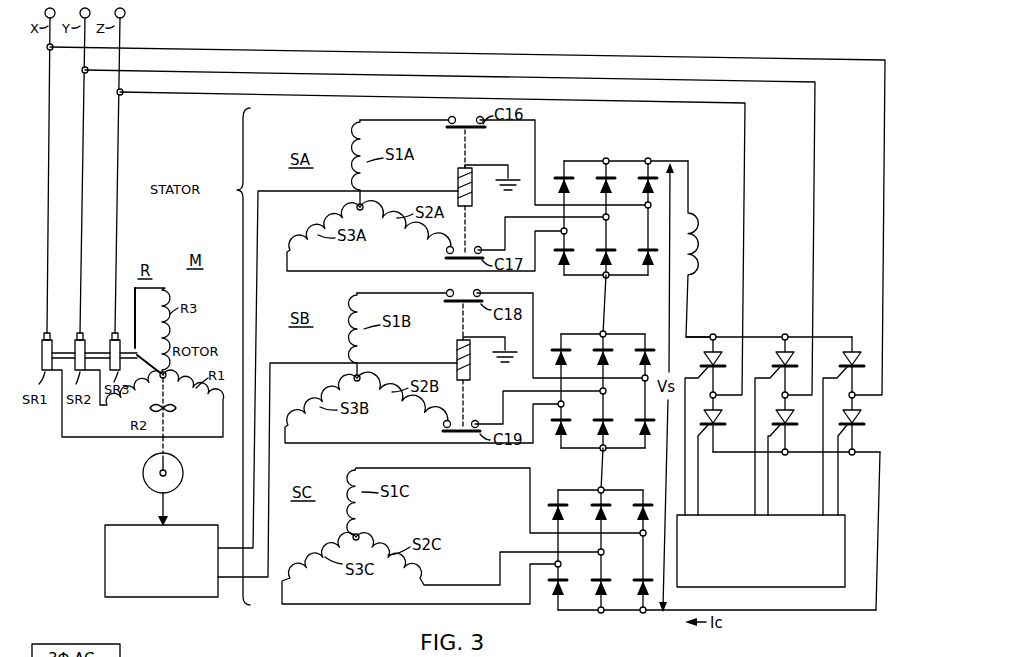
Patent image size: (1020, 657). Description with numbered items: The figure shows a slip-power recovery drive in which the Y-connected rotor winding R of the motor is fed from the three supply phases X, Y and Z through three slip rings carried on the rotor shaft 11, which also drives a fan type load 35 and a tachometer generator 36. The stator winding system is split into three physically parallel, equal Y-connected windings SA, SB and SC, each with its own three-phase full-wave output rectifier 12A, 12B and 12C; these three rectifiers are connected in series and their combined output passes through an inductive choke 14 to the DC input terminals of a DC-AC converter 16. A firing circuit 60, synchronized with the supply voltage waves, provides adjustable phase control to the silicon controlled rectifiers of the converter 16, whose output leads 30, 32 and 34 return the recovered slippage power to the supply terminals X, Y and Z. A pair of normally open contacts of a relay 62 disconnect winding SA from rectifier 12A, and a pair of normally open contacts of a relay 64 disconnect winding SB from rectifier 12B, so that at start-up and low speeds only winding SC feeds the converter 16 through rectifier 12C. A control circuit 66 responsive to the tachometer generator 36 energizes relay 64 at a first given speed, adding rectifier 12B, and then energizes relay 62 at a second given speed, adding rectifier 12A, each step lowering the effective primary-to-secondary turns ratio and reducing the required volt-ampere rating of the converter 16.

The rotor shaft 11 is at (139, 351).
The output rectifier 12A is at (668, 155).
The output rectifier 12B is at (668, 328).
The output rectifier 12C is at (662, 489).
The inductive choke 14 is at (699, 240).
The DC-AC converter 16 is at (822, 338).
The output lead 30 is at (745, 170).
The output lead 32 is at (815, 170).
The output lead 34 is at (885, 178).
The fan type load 35 is at (172, 418).
The tachometer generator 36 is at (183, 471).
The firing circuit 60 is at (742, 588).
The relay 62 is at (472, 198).
The relay 64 is at (470, 358).
The control circuit 66 is at (105, 554).